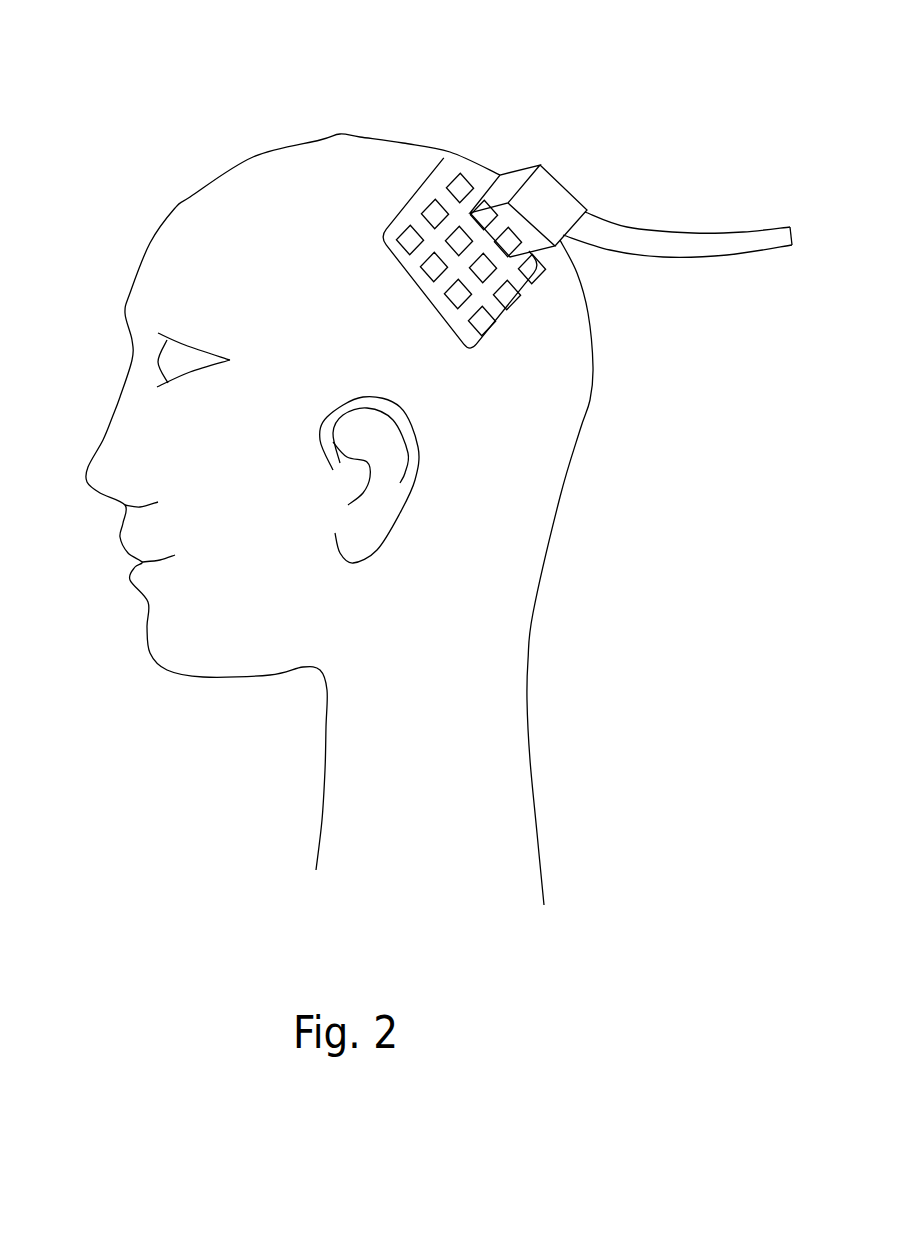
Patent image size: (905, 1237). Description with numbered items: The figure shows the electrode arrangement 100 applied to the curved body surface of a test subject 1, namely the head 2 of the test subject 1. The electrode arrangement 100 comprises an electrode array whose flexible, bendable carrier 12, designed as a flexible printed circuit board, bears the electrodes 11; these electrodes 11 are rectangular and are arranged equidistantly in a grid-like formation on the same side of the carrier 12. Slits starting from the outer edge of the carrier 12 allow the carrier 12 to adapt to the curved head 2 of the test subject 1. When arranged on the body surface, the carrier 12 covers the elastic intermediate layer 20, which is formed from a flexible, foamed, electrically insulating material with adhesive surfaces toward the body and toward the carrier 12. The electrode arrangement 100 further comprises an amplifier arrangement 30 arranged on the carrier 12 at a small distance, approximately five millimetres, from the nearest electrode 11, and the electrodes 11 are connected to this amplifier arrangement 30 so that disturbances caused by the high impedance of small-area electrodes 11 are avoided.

The test subject 1 is at (108, 202).
The head 2 is at (252, 158).
The electrode arrangement 100 is at (493, 143).
The flexible carrier 12 is at (518, 312).
The electrodes 11 is at (537, 270).
The amplifier arrangement 30 is at (545, 203).
The elastic intermediate layer 20 is at (567, 257).